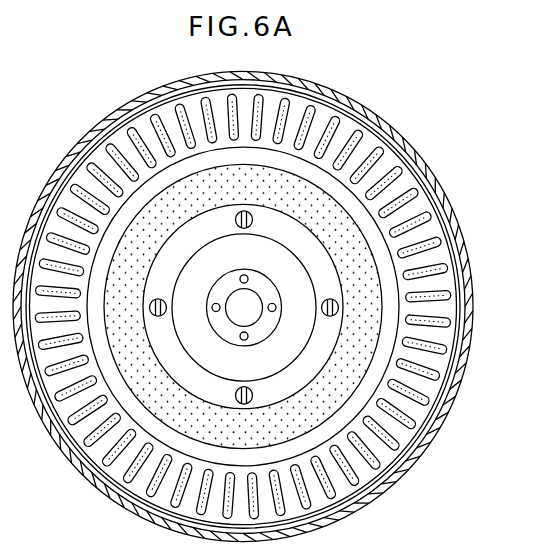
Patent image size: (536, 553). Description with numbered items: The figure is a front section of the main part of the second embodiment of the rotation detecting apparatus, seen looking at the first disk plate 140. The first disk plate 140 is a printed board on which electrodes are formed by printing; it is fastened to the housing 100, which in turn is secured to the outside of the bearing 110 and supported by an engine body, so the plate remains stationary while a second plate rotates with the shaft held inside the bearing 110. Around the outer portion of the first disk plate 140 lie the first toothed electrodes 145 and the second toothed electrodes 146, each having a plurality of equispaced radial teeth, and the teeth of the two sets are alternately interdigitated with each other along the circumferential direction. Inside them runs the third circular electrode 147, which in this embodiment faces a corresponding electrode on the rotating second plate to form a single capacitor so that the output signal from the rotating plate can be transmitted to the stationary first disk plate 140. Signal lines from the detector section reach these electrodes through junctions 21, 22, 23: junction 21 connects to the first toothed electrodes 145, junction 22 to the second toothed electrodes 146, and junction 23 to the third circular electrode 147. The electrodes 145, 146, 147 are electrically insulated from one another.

The housing 100 is at (393, 473).
The bearing 110 is at (303, 279).
The first disk plate 140 is at (410, 186).
The first toothed electrodes 145 is at (443, 325).
The second toothed electrodes 146 is at (447, 352).
The junction 21 is at (392, 323).
The junction 22 is at (140, 423).
The junction 23 is at (243, 306).
The third circular electrode 147 is at (360, 372).